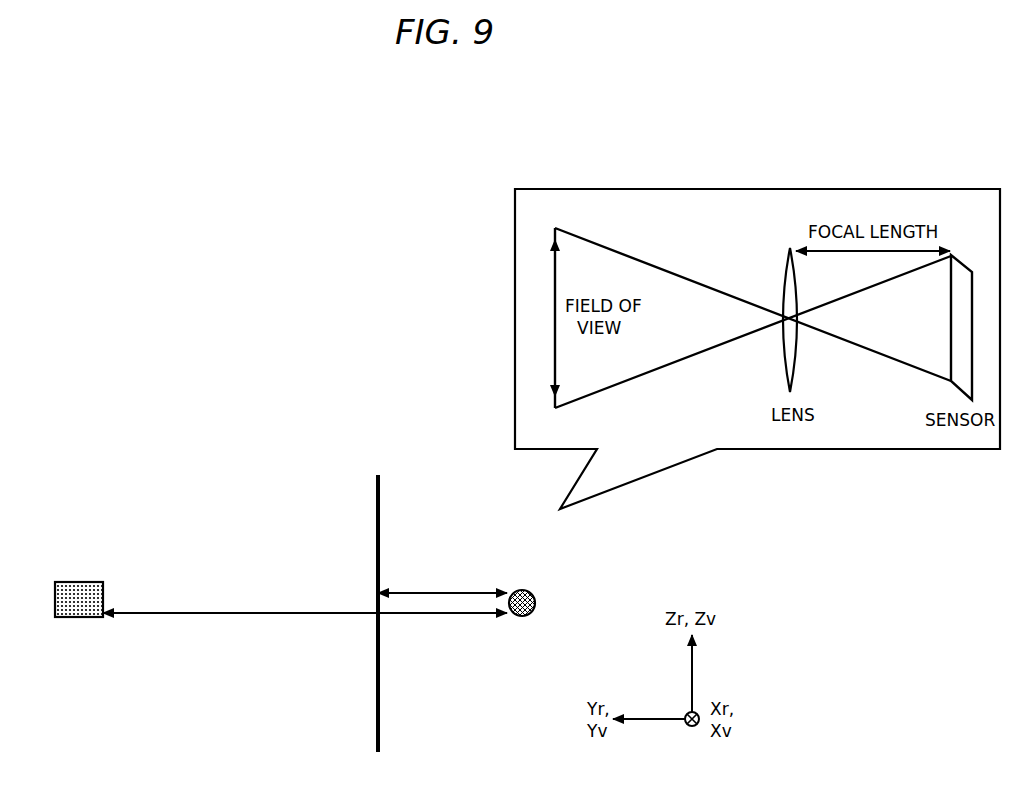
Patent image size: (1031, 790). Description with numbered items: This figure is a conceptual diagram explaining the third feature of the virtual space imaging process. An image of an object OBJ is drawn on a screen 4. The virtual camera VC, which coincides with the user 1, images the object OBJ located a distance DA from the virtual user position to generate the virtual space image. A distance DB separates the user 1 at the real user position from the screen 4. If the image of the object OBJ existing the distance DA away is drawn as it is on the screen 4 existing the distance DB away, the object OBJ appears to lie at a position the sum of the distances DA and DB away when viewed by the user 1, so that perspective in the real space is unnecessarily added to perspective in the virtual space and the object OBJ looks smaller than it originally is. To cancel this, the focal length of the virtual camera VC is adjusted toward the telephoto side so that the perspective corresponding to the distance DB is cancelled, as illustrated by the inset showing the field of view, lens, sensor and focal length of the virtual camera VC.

The screen 4 is at (378, 471).
The user 1 is at (527, 568).
The virtual camera VC is at (524, 589).
The object OBJ is at (78, 580).
The distance DA is at (305, 632).
The distance DB is at (442, 576).